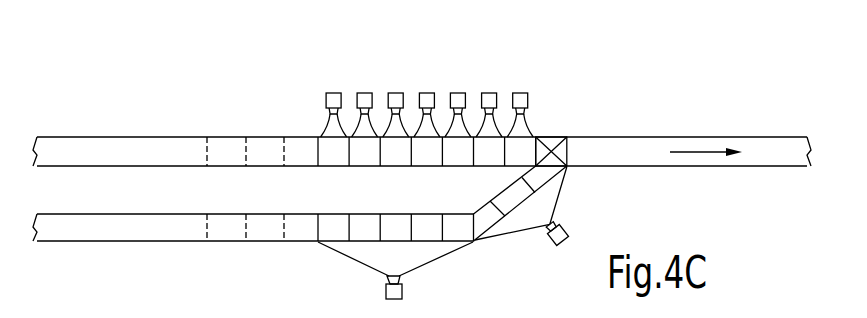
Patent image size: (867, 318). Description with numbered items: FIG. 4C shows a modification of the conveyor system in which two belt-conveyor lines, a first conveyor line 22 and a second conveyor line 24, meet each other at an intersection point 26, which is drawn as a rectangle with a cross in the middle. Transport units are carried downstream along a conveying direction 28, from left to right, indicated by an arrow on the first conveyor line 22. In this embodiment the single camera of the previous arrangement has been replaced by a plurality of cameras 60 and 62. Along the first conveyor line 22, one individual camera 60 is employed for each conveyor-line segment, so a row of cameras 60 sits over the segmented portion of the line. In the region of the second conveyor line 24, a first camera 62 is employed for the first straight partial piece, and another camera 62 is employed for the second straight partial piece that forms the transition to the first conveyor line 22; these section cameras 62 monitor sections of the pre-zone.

The first conveyor line 22 is at (182, 164).
The second conveyor line 24 is at (182, 240).
The intersection point 26 is at (559, 133).
The conveying direction 28 is at (694, 151).
The cameras 60 is at (325, 100).
The cameras 62 is at (402, 288).